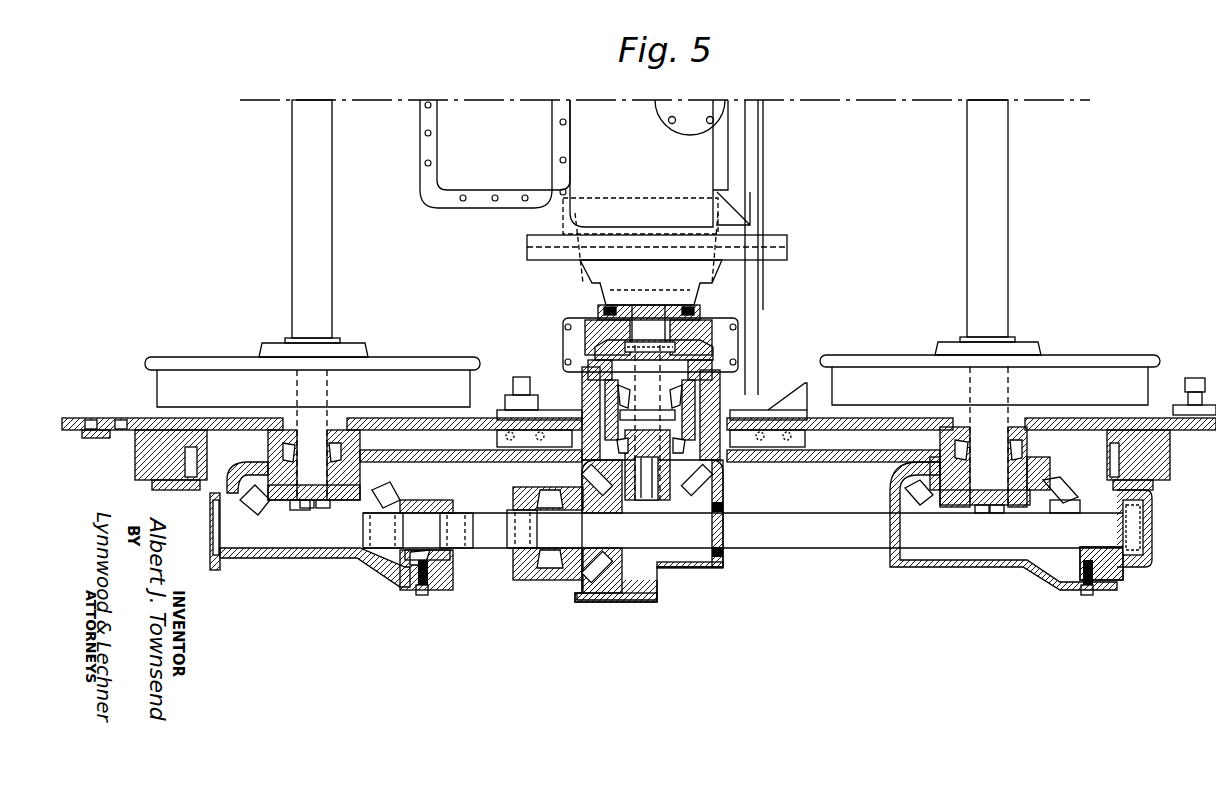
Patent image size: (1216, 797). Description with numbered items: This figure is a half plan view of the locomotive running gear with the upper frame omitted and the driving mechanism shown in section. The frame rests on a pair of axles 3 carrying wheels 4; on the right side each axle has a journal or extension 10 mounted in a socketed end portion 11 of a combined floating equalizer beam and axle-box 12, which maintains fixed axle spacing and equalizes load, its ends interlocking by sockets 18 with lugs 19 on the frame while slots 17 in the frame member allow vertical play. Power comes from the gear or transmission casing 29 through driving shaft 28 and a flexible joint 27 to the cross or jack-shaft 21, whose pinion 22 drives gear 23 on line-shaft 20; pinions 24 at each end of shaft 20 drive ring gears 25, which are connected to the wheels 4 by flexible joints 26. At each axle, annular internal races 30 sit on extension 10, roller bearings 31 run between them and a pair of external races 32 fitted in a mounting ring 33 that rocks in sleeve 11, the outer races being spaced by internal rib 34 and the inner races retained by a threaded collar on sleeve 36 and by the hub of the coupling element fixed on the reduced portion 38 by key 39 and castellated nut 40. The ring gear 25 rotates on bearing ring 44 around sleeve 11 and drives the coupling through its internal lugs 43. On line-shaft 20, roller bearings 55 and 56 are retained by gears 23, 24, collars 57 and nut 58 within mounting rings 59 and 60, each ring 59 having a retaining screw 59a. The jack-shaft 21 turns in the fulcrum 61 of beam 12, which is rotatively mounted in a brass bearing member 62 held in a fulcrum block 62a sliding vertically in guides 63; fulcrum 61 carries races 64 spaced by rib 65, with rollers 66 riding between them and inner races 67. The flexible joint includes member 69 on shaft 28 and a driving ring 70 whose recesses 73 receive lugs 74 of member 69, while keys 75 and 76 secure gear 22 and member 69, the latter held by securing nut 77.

The axle 3 is at (322, 203).
The wheel 4 is at (422, 372).
The axle journal or extension 10 is at (651, 436).
The socketed end portion (sleeve or socket) 11 is at (940, 441).
The combined floating equalizer beam and axle-box 12 is at (828, 458).
The slot or aperture 17 is at (340, 418).
The socket 18 is at (185, 485).
The lug 19 is at (135, 470).
The line-shaft 20 is at (743, 529).
The cross or jack-shaft 21 is at (647, 422).
The pinion 22 is at (646, 506).
The gear 23 is at (612, 593).
The pinion 24 is at (365, 568).
The ring gear 25 is at (240, 560).
The flexible joint 26 is at (295, 508).
The flexible joint 27 is at (710, 347).
The driving shaft 28 is at (646, 313).
The gear or transmission casing 29 is at (585, 167).
The internal roller bearing race 30 is at (650, 387).
The roller bearing 31 is at (268, 443).
The external race 32 is at (360, 443).
The bearing or mounting ring 33 is at (962, 425).
The internal rib 34 is at (1053, 444).
The sleeve 36 is at (1012, 418).
The reduced portion of axle extension 38 is at (297, 512).
The key 39 is at (306, 512).
The castellated nut 40 is at (324, 512).
The lug 43 is at (970, 515).
The bearing ring 44 is at (245, 512).
The roller bearing 55 is at (418, 580).
The roller bearing 56 is at (560, 580).
The collar 57 is at (455, 552).
The nut 58 is at (1148, 530).
The mounting ring 59 is at (412, 580).
The retaining screw 59a is at (425, 596).
The mounting ring 60 is at (588, 595).
The fulcrum 61 is at (690, 395).
The brass bearing member 62 is at (582, 405).
The fulcrum block 62a is at (770, 410).
The guide 63 is at (580, 400).
The race 64 is at (643, 388).
The rib or shoulder 65 is at (680, 423).
The roller 66 is at (632, 490).
The inner race 67 is at (651, 443).
The joint member 69 is at (676, 303).
The driving ring 70 is at (590, 358).
The recess 73 is at (590, 335).
The lug 74 is at (608, 330).
The key 75 is at (660, 490).
The key 76 is at (690, 367).
The securing nut 77 is at (692, 335).